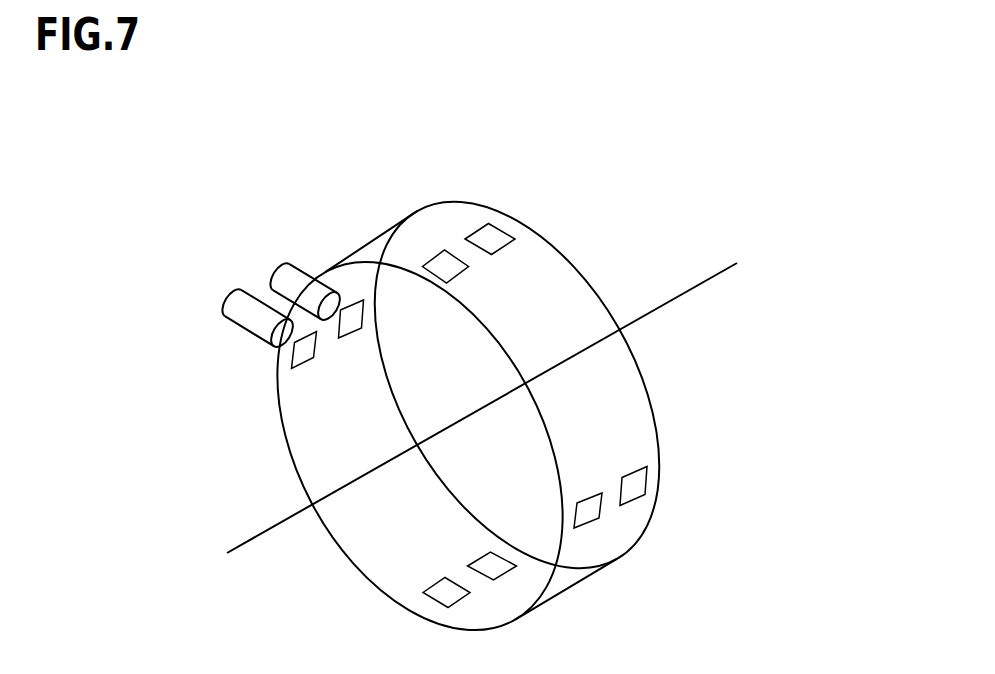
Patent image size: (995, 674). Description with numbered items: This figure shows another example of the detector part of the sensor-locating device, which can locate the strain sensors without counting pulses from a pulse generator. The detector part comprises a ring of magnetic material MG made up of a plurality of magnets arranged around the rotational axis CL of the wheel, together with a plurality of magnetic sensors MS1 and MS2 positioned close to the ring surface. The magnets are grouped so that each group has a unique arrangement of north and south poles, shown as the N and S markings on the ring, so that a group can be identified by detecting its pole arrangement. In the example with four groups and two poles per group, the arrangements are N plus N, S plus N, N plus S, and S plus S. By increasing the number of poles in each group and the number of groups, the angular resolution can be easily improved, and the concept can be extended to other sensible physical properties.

The magnetic material MG is at (563, 258).
The rotational axis CL is at (695, 288).
The magnetic sensor MS1 is at (236, 309).
The magnetic sensor MS2 is at (283, 279).